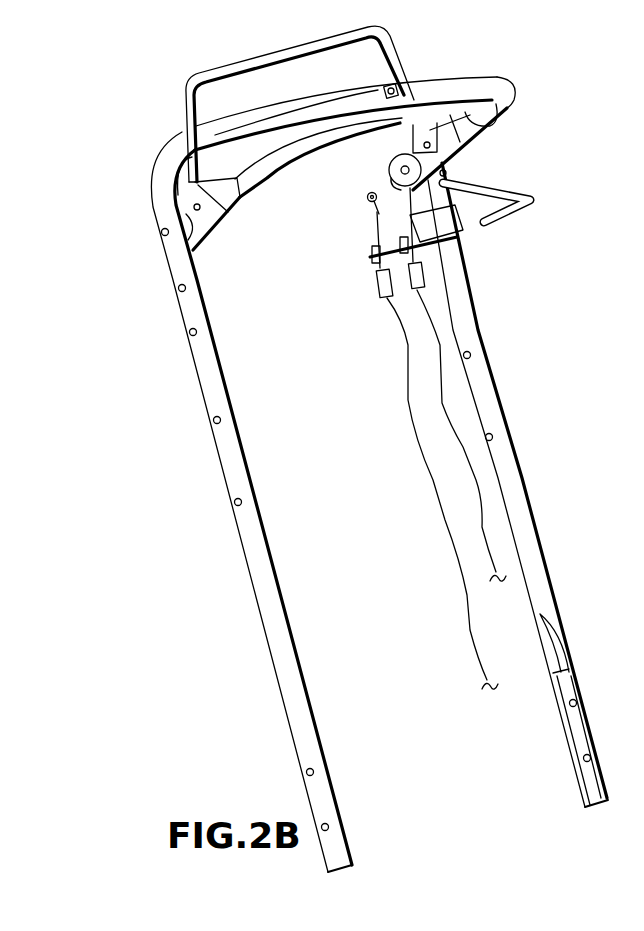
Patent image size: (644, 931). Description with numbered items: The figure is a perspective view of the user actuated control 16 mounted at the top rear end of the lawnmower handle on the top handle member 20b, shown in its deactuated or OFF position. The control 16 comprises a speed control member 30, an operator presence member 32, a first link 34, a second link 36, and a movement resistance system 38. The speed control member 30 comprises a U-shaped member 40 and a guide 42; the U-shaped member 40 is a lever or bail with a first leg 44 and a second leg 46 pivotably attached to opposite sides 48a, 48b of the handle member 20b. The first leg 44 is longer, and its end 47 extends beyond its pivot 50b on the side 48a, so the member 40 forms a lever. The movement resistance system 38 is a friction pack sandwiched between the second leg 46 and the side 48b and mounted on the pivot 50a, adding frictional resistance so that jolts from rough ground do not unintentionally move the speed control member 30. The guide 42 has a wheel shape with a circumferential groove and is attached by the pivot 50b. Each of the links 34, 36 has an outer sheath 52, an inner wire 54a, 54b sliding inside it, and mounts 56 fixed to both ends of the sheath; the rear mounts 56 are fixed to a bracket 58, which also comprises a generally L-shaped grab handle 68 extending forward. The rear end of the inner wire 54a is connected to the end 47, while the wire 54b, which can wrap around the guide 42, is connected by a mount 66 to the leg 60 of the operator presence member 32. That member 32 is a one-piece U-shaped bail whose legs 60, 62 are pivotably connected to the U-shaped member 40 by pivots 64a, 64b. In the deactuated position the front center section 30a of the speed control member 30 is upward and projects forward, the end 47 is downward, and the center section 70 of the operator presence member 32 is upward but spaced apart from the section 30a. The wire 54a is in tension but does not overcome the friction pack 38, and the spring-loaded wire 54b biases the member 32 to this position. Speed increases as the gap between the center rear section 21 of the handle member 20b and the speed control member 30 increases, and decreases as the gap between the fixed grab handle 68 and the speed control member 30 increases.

The user actuated control 16 is at (476, 93).
The top handle member 20b is at (306, 672).
The center rear section 21 is at (327, 90).
The speed control member 30 is at (517, 92).
The front center section 30a is at (253, 120).
The operator presence member 32 is at (186, 80).
The first link 34 is at (402, 323).
The second link 36 is at (442, 400).
The movement resistance system 38 is at (186, 227).
The U-shaped member 40 is at (277, 173).
The guide 42 is at (395, 165).
The first leg 44 is at (468, 150).
The second leg 46 is at (208, 233).
The end 47 is at (368, 187).
The side 48a is at (546, 568).
The side 48b is at (284, 590).
The pivot 50a is at (161, 232).
The pivot 50b is at (446, 173).
The outer sheath 52 is at (450, 525).
The inner wire 54a is at (374, 230).
The inner wire 54b is at (446, 257).
The mounts 56 is at (377, 286).
The bracket 58 is at (457, 226).
The leg 60 is at (393, 42).
The leg 62 is at (181, 108).
The pivot 64a is at (188, 188).
The pivot 64b is at (489, 123).
The mount 66 is at (400, 92).
The grab handle 68 is at (538, 208).
The center section 70 is at (232, 62).